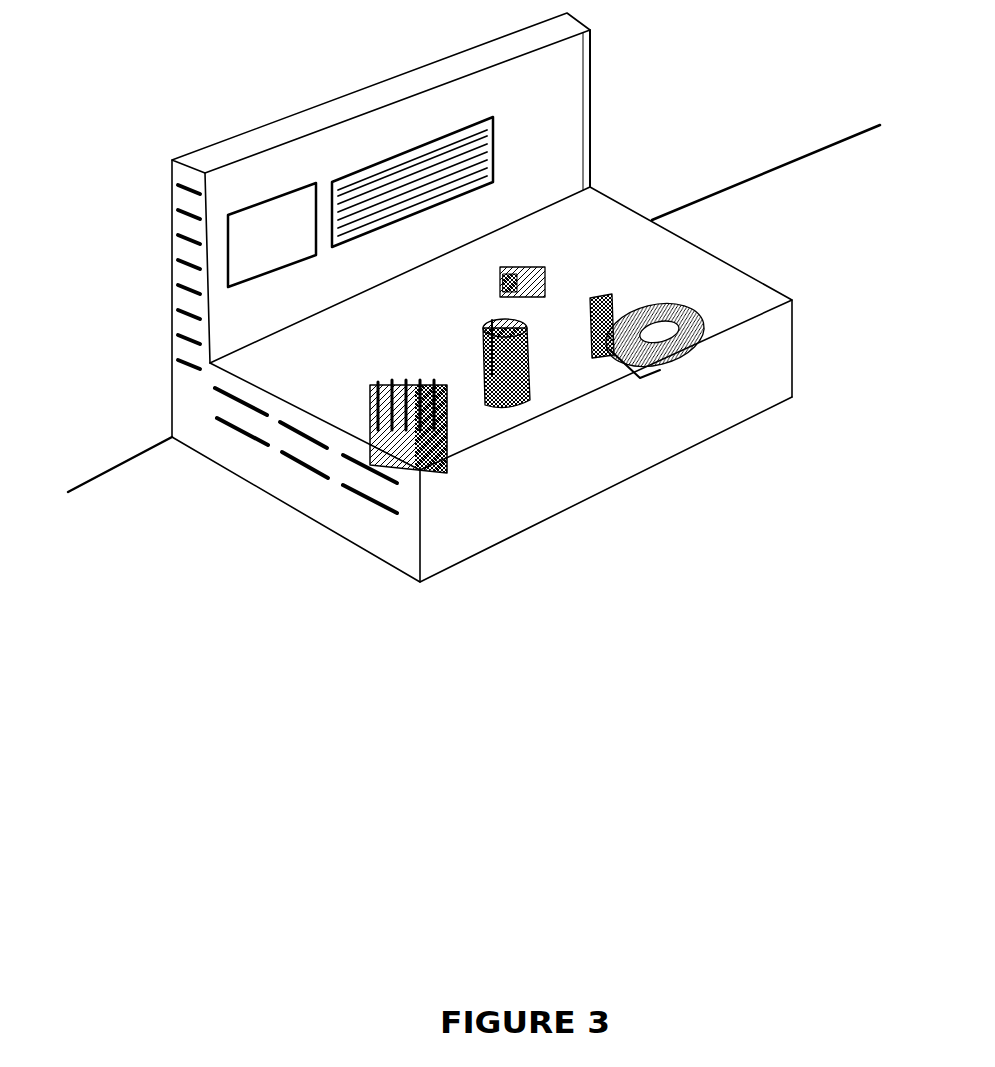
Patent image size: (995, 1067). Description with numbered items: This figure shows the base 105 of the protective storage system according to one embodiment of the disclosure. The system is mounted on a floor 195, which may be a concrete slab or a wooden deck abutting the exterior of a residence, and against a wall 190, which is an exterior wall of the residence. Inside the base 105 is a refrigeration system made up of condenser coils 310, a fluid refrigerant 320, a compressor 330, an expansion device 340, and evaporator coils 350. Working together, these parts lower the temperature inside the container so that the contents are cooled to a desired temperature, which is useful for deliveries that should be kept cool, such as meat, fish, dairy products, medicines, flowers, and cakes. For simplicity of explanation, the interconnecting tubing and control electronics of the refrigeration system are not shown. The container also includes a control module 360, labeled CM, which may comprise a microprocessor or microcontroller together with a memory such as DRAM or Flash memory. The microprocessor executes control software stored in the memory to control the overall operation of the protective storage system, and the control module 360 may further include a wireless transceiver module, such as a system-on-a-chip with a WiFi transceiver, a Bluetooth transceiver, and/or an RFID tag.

The base 105 is at (718, 401).
The wall 190 is at (105, 105).
The floor 195 is at (105, 550).
The condenser coils 310 is at (376, 444).
The fluid refrigerant 320 is at (503, 386).
The compressor 330 is at (680, 298).
The expansion device 340 is at (538, 257).
The evaporator coils 350 is at (415, 160).
The control module (CM) 360 is at (300, 257).